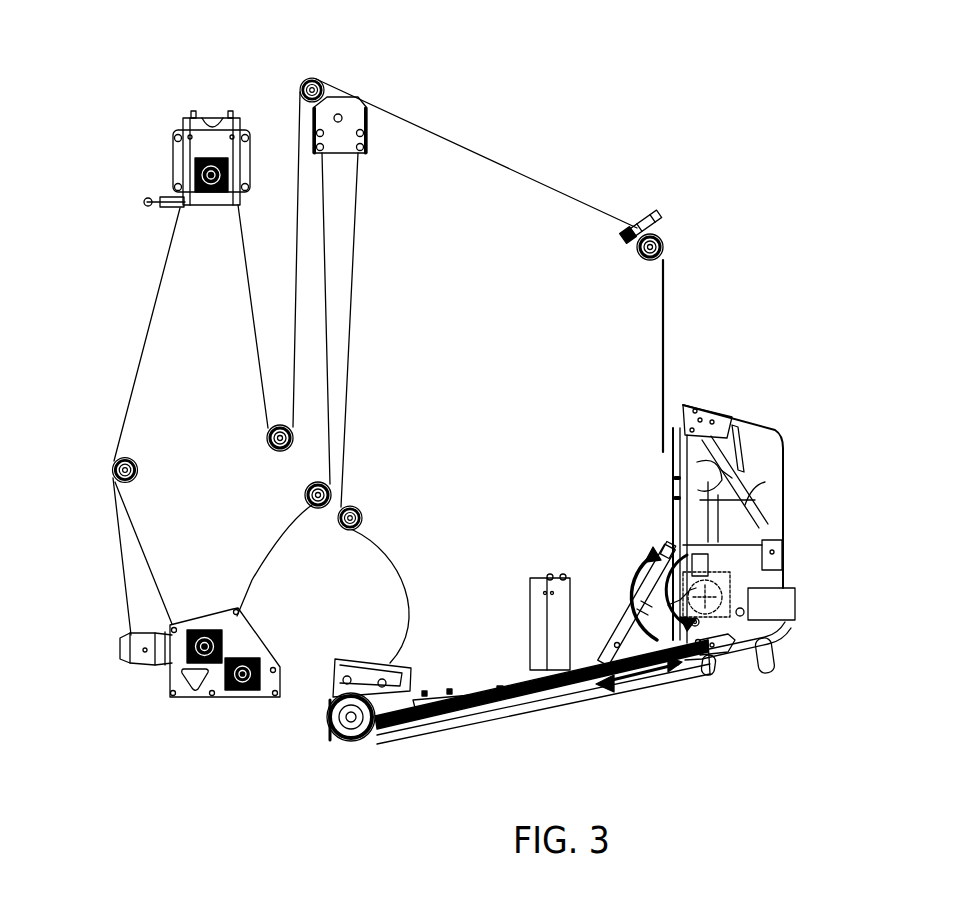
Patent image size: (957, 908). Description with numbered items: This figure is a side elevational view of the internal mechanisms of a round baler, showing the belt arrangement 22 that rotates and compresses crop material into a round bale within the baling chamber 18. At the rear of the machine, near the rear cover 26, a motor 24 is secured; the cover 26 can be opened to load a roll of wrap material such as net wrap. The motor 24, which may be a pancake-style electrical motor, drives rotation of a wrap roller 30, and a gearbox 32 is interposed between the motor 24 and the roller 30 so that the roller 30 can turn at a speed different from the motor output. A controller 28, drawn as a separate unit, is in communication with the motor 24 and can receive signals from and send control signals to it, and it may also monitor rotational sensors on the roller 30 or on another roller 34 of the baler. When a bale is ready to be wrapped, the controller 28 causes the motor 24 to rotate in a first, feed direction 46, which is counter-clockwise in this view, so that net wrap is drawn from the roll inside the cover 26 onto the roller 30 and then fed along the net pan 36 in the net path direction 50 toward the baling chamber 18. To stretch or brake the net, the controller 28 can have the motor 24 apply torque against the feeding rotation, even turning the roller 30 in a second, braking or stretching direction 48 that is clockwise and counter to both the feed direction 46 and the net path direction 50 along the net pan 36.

The baling chamber 18 is at (360, 582).
The belt arrangement 22 is at (420, 88).
The motor 24 is at (665, 545).
The rear cover 26 is at (745, 418).
The controller 28 is at (791, 622).
The wrap roller 30 is at (658, 588).
The gearbox 32 is at (720, 588).
The roller 34 is at (340, 703).
The net pan 36 is at (529, 740).
The feed direction 46 is at (666, 612).
The braking or stretching direction 48 is at (632, 592).
The net path direction 50 is at (633, 680).